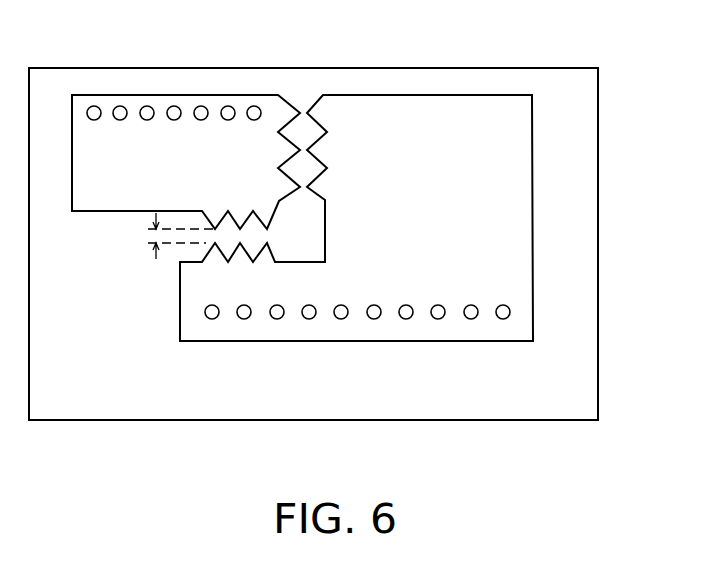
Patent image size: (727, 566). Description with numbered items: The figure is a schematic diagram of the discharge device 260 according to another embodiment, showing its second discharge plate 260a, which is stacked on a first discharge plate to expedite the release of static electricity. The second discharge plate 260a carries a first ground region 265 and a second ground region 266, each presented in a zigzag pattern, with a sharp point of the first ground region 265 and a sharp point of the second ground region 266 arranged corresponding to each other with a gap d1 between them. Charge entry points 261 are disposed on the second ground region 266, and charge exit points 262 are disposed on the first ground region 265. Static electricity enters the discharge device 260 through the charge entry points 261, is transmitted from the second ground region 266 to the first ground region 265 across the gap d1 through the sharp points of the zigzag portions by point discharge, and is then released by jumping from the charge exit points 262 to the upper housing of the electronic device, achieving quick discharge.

The discharge device 260 is at (366, 281).
The second discharge plate 260a is at (572, 116).
The charge entry points 261 is at (510, 312).
The charge exit points 262 is at (255, 106).
The first ground region 265 is at (145, 95).
The second ground region 266 is at (507, 190).
The gap d1 is at (168, 236).